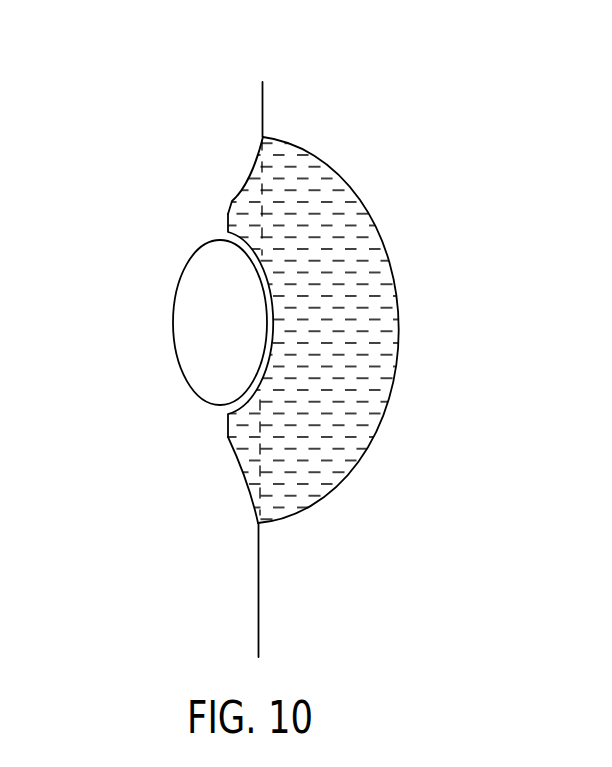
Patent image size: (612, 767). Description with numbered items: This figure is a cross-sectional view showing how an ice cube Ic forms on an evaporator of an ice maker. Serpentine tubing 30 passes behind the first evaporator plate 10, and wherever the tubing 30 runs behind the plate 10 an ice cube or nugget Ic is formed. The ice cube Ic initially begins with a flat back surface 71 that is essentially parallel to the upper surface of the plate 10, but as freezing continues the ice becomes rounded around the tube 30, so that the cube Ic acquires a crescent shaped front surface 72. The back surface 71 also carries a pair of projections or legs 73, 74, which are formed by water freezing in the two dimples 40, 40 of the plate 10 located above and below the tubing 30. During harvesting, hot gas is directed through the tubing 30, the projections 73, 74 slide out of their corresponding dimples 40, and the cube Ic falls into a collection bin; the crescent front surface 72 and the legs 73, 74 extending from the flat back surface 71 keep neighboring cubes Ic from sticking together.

The first evaporator plate 10 is at (224, 155).
The serpentine tubing 30 is at (237, 342).
The ice forming location 40 is at (228, 218).
The back surface 71 is at (260, 148).
The crescent shaped front surface 72 is at (398, 340).
The projection 73 is at (240, 203).
The projection 74 is at (230, 444).
The ice cube Ic is at (352, 290).